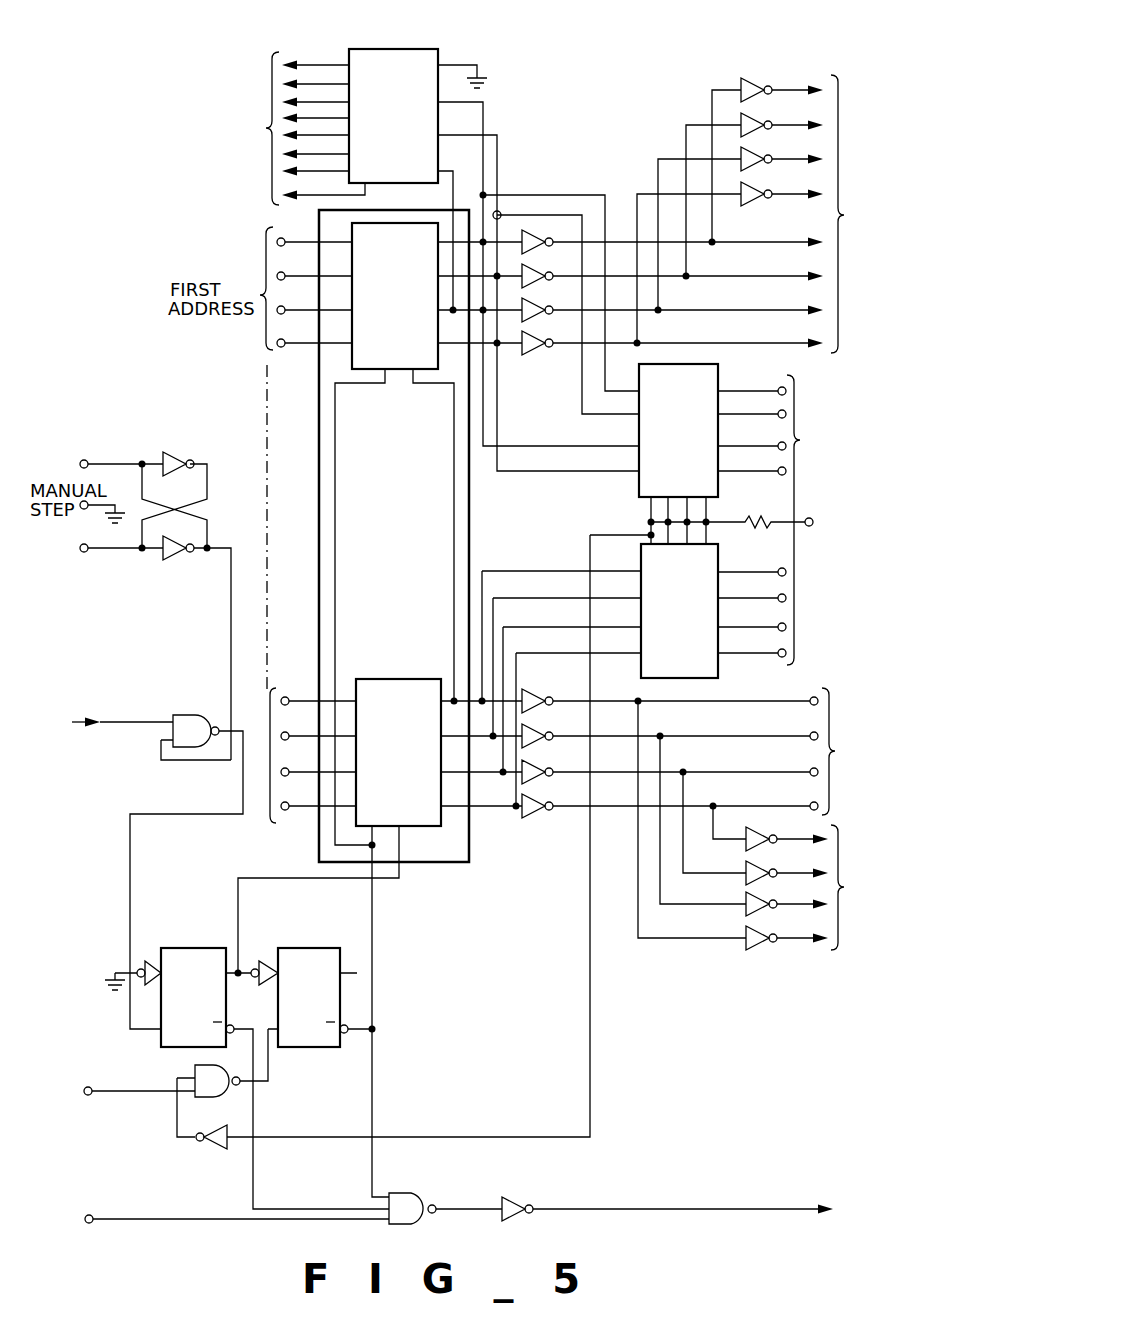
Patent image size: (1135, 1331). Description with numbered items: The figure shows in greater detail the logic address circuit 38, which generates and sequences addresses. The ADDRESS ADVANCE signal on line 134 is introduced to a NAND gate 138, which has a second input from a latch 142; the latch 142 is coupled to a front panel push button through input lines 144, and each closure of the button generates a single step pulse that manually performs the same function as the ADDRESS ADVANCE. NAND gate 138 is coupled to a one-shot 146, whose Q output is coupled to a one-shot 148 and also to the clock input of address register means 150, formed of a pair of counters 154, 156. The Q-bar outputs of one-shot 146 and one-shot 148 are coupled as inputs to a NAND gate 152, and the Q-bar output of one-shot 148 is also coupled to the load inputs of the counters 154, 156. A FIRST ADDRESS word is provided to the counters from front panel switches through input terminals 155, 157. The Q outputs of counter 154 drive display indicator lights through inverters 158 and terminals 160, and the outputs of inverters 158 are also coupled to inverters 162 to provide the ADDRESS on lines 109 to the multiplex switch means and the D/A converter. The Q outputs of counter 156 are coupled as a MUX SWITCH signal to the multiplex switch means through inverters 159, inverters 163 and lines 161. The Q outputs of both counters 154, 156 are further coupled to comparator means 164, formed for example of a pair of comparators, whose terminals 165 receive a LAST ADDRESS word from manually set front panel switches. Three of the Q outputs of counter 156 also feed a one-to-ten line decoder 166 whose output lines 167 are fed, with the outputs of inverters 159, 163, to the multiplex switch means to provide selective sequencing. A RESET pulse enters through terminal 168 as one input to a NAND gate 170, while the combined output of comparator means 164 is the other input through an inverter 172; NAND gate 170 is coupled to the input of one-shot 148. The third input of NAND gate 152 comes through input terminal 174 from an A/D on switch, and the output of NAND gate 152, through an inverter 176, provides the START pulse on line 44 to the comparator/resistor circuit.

The logic address circuit 38 is at (180, 364).
The line 44 is at (812, 1214).
The lines 109 is at (868, 902).
The line 134 is at (108, 724).
The NAND gate 138 is at (189, 714).
The latch 142 is at (222, 480).
The input lines 144 is at (100, 462).
The one-shot 146 is at (168, 947).
The one-shot 148 is at (283, 947).
The address register means 150 is at (314, 426).
The NAND gate 152 is at (416, 1203).
The counter 154 is at (403, 677).
The input terminals 155 is at (315, 755).
The counter 156 is at (402, 371).
The input terminals 157 is at (312, 293).
The inverters 158 is at (543, 830).
The inverters 159 is at (536, 360).
The terminals 160 is at (835, 751).
The lines 161 is at (844, 215).
The inverters 162 is at (768, 955).
The inverters 163 is at (764, 72).
The comparator means 164 is at (648, 546).
The terminals 165 is at (800, 440).
The 1-to-10 line decoder 166 is at (388, 49).
The output lines 167 is at (264, 128).
The terminal 168 is at (90, 1097).
The NAND gate 170 is at (200, 1074).
The inverter 172 is at (214, 1148).
The input terminal 174 is at (93, 1223).
The inverter 176 is at (519, 1211).